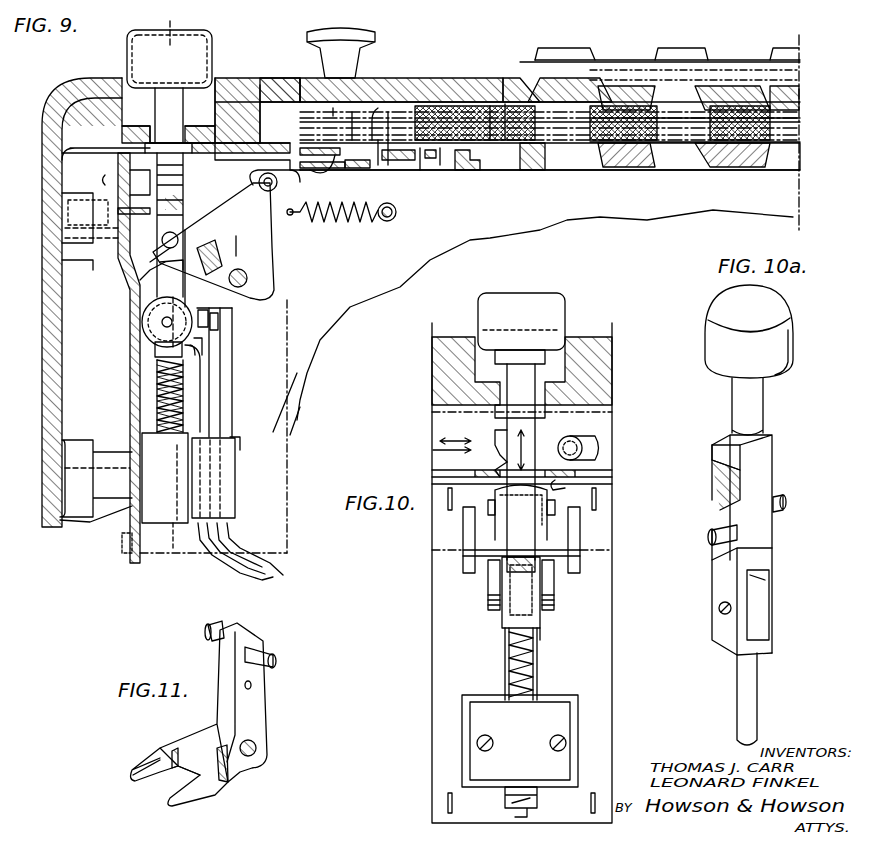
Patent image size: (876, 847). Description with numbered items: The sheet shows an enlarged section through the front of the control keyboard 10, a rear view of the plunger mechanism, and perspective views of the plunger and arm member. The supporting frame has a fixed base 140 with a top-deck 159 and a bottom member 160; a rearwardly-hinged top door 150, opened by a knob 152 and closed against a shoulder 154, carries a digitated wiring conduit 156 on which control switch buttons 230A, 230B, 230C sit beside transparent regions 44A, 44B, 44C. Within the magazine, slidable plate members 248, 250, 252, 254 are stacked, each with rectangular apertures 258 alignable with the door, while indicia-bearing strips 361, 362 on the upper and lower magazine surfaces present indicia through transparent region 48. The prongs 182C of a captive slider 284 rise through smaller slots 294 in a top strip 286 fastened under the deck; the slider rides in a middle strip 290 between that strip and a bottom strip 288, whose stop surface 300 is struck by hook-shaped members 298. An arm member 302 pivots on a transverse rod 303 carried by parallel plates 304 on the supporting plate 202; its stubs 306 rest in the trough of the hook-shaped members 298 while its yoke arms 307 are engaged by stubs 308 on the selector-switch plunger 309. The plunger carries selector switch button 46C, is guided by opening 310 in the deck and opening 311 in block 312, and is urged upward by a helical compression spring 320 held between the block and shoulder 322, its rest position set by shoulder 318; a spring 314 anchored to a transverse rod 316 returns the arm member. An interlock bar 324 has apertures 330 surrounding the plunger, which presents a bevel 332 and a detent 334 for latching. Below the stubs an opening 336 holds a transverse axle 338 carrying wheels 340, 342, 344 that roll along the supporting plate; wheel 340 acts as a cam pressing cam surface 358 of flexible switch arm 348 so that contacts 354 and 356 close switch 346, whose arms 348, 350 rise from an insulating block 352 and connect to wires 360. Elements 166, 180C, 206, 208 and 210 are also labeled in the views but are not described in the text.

In FIG. 9, the control keyboard 10 is at (170, 60).
In FIG. 9, the selector switch button 46C is at (205, 38).
In FIG. 10, the selector switch button 46C is at (555, 305).
In FIG. 10A, the selector switch button 46C is at (785, 334).
In FIG. 9, the transparent region 48 is at (425, 100).
In FIG. 9, the transparent region 44A is at (535, 96).
In FIG. 9, the transparent region 44B is at (655, 100).
In FIG. 9, the transparent region 44C is at (775, 98).
In FIG. 9, the fixed base 140 is at (56, 528).
In FIG. 9, the top door 150 is at (288, 72).
In FIG. 9, the knob 152 is at (330, 34).
In FIG. 9, the shoulder 154 is at (262, 78).
In FIG. 9, the digitated wiring conduit 156 is at (744, 53).
In FIG. 9, the top-deck 159 is at (95, 78).
In FIG. 10, the top-deck 159 is at (585, 350).
In FIG. 9, the bottom member 160 is at (748, 155).
In FIG. 9, the frame member 166 is at (660, 160).
In FIG. 9, the rod 180C is at (392, 112).
In FIG. 9, the upwardly-projecting prongs 182C is at (376, 110).
In FIG. 9, the supporting plate 202 is at (130, 378).
In FIG. 9, the rod 206 is at (770, 114).
In FIG. 9, the rod 208 is at (770, 143).
In FIG. 9, the pin 210 is at (335, 108).
In FIG. 9, the control switch button 230A is at (560, 48).
In FIG. 9, the control switch button 230B is at (680, 48).
In FIG. 9, the control switch button 230C is at (790, 48).
In FIG. 9, the slidable plate member 248 is at (505, 148).
In FIG. 9, the slidable plate member 250 is at (530, 150).
In FIG. 9, the slidable plate member 252 is at (482, 104).
In FIG. 9, the slidable plate member 254 is at (506, 104).
In FIG. 9, the rectangular aperture 258 is at (598, 100).
In FIG. 9, the captive slider 284 is at (368, 165).
In FIG. 9, the top strip 286 is at (222, 140).
In FIG. 9, the bottom strip 288 is at (470, 170).
In FIG. 9, the middle strip 290 is at (405, 165).
In FIG. 9, the smaller slots 294 is at (352, 165).
In FIG. 9, the hook-shaped members 298 is at (317, 179).
In FIG. 9, the stop surface 300 is at (320, 169).
In FIG. 9, the arm member 302 is at (281, 241).
In FIG. 10, the arm member 302 is at (507, 492).
In FIG. 11, the arm member 302 is at (271, 710).
In FIG. 9, the transverse rod 303 is at (247, 278).
In FIG. 10, the transverse rod 303 is at (565, 540).
In FIG. 9, the parallel plates 304 is at (268, 290).
In FIG. 10, the parallel plates 304 is at (582, 550).
In FIG. 9, the oppositely-extending stubs 306 is at (259, 182).
In FIG. 11, the oppositely-extending stubs 306 is at (265, 652).
In FIG. 9, the yoke arms 307 is at (170, 260).
In FIG. 11, the yoke arms 307 is at (172, 800).
In FIG. 9, the oppositely-extending stubs 308 is at (162, 246).
In FIG. 10, the oppositely-extending stubs 308 is at (555, 510).
In FIG. 10A, the oppositely-extending stubs 308 is at (740, 535).
In FIG. 9, the selector-switch plunger 309 is at (146, 358).
In FIG. 10, the selector-switch plunger 309 is at (546, 435).
In FIG. 10A, the selector-switch plunger 309 is at (786, 461).
In FIG. 9, the encircling opening 310 is at (155, 125).
In FIG. 9, the opening 311 is at (182, 539).
In FIG. 9, the block 312 is at (147, 525).
In FIG. 10, the block 312 is at (578, 705).
In FIG. 9, the spring 314 is at (368, 222).
In FIG. 9, the transversely-extending rod 316 is at (398, 214).
In FIG. 9, the shoulder 318 is at (190, 128).
In FIG. 9, the helical compression spring 320 is at (155, 410).
In FIG. 10, the helical compression spring 320 is at (540, 658).
In FIG. 9, the shoulder 322 is at (202, 365).
In FIG. 10, the shoulder 322 is at (545, 630).
In FIG. 10A, the shoulder 322 is at (775, 650).
In FIG. 9, the interlock bar 324 is at (106, 152).
In FIG. 10, the interlock bar 324 is at (610, 463).
In FIG. 9, the rectangular aperture 330 is at (118, 200).
In FIG. 10, the rectangular aperture 330 is at (566, 490).
In FIG. 9, the bevel 332 is at (118, 180).
In FIG. 10, the bevel 332 is at (495, 462).
In FIG. 10A, the bevel 332 is at (722, 488).
In FIG. 10, the detent 334 is at (495, 438).
In FIG. 10A, the detent 334 is at (718, 458).
In FIG. 10, the central opening 336 is at (540, 572).
In FIG. 10A, the central opening 336 is at (770, 612).
In FIG. 9, the transverse axle 338 is at (162, 322).
In FIG. 9, the wheel 340 is at (145, 300).
In FIG. 10, the wheel 340 is at (515, 568).
In FIG. 9, the wheel 342 is at (148, 336).
In FIG. 10, the wheel 342 is at (490, 610).
In FIG. 10, the wheel 344 is at (555, 610).
In FIG. 9, the electrical switch 346 is at (240, 433).
In FIG. 9, the flexible switch arm 348 is at (211, 393).
In FIG. 9, the flexible switch arm 350 is at (222, 402).
In FIG. 10, the flexible switch arm 350 is at (505, 682).
In FIG. 9, the insulating block 352 is at (232, 490).
In FIG. 10, the insulating block 352 is at (521, 775).
In FIG. 9, the switch contact 354 is at (213, 318).
In FIG. 9, the switch contact 356 is at (220, 333).
In FIG. 9, the cam surface 358 is at (205, 352).
In FIG. 9, the wires 360 is at (233, 567).
In FIG. 9, the indicia-bearing strip 361 is at (475, 113).
In FIG. 9, the indicia-bearing strip 362 is at (438, 168).